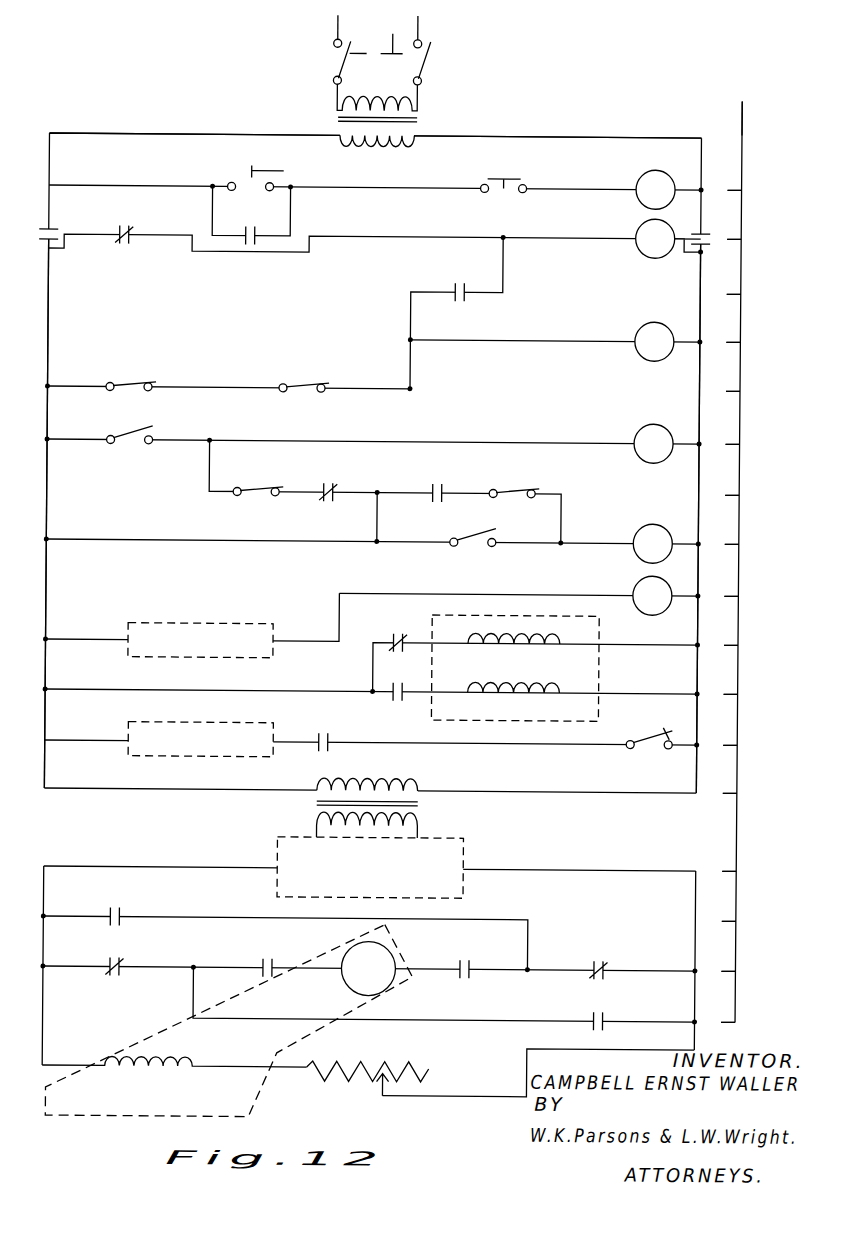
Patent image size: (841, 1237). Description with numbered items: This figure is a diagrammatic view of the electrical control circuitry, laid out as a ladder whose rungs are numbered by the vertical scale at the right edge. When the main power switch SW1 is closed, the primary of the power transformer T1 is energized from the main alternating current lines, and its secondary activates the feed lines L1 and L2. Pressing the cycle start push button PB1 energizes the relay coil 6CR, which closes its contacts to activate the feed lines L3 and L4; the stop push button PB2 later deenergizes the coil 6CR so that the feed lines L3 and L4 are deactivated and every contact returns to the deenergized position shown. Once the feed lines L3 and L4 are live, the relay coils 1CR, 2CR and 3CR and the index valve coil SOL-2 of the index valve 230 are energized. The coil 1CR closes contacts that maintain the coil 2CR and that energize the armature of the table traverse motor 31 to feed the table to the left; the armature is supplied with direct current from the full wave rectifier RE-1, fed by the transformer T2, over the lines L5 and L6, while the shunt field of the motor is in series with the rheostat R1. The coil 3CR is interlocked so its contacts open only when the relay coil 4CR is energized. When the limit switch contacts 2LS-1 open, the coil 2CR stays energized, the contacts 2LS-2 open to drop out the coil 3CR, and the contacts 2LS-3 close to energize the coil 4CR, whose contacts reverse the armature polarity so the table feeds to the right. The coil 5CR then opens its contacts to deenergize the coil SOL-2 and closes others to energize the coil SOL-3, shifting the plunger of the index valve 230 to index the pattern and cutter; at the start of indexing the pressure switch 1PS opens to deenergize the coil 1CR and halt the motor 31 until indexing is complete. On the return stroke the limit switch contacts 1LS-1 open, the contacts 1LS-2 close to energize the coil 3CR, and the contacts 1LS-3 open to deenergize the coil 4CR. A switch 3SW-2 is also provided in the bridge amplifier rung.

The index valve 230 is at (610, 628).
The table traverse motor 31 is at (149, 1040).
The relay coil 1CR is at (638, 228).
The relay coil 2CR is at (638, 324).
The relay coil 3CR is at (640, 428).
The relay coil 4CR is at (640, 529).
The relay coil 5CR is at (642, 583).
The relay coil 6CR is at (646, 170).
The power transformer T1 is at (430, 102).
The transformer T2 is at (430, 835).
The main power switch SW1 is at (432, 60).
The cycle start push button PB1 is at (285, 169).
The stop push button PB2 is at (486, 181).
The pressure switch 1PS is at (121, 248).
The full wave rectifier RE-1 is at (280, 844).
The rheostat R1 is at (367, 1064).
The index valve coil SOL-2 is at (514, 629).
The index valve coil SOL-3 is at (513, 702).
The switch 3SW-2 is at (648, 723).
The limit switch contacts 1LS-1 is at (286, 381).
The limit switch contacts 1LS-2 is at (112, 435).
The limit switch contacts 1LS-3 is at (519, 476).
The limit switch contacts 2LS-1 is at (128, 372).
The limit switch contacts 2LS-2 is at (238, 487).
The limit switch contacts 2LS-3 is at (455, 535).
The feed line L1 is at (167, 133).
The feed line L2 is at (597, 124).
The feed line L3 is at (53, 311).
The feed line L4 is at (700, 375).
The line L5 is at (161, 855).
The line L6 is at (579, 854).